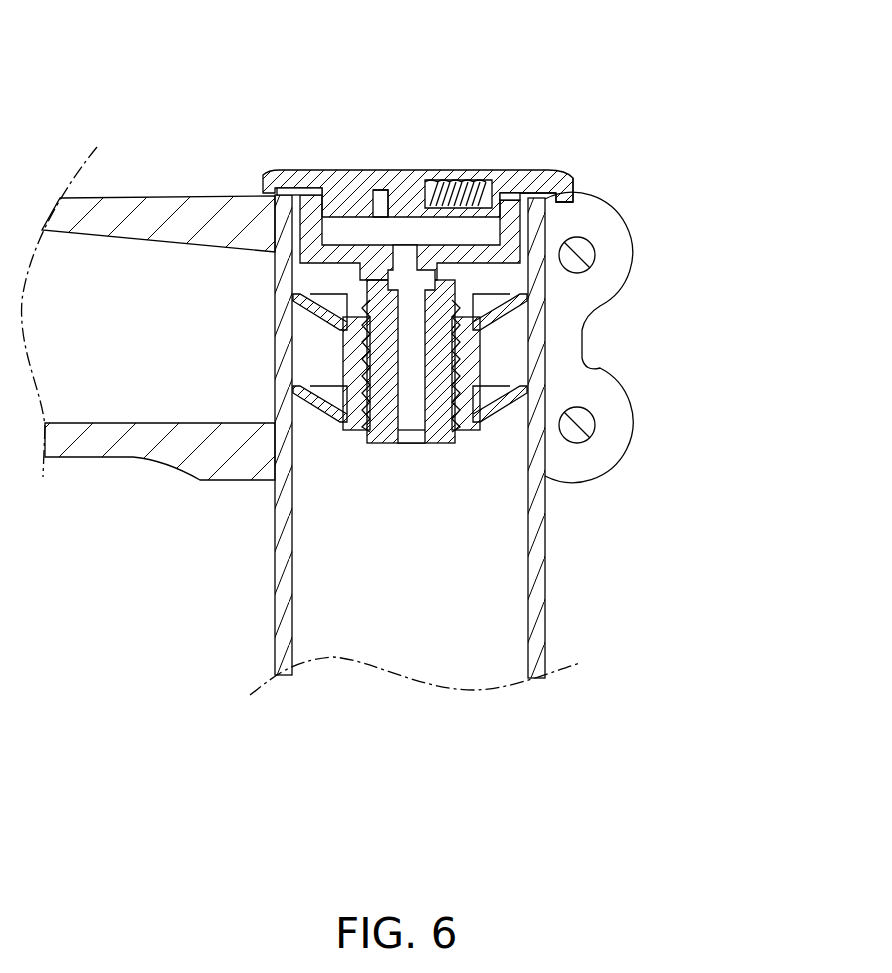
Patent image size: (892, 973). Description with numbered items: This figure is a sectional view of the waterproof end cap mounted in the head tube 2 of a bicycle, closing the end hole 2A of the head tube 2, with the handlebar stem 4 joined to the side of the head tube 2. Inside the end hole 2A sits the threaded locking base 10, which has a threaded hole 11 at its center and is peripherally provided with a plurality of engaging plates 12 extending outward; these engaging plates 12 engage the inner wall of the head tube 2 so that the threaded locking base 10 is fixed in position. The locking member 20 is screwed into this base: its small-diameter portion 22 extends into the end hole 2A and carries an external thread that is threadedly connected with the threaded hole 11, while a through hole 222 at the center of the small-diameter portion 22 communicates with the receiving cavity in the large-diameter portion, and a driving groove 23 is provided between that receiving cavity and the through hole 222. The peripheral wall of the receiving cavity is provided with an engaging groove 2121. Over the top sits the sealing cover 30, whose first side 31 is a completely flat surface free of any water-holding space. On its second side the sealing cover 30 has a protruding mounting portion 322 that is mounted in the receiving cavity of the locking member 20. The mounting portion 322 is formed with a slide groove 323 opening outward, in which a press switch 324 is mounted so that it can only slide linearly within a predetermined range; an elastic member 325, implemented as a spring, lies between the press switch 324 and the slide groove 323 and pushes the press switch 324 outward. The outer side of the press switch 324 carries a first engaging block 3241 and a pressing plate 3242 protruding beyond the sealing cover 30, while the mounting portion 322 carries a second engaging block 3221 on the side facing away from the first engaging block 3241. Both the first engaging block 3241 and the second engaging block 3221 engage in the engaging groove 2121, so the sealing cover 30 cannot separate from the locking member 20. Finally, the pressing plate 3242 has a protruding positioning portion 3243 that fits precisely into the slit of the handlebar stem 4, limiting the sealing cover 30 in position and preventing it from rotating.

The head tube 2 is at (546, 596).
The end hole 2A is at (323, 498).
The handlebar stem 4 is at (152, 203).
The threaded locking base 10 is at (522, 389).
The threaded hole 11 is at (305, 373).
The small-diameter portion 22 is at (343, 362).
The engaging plates 12 is at (520, 387).
The locking member 20 is at (524, 264).
The driving groove 23 is at (420, 272).
The sealing cover 30 is at (467, 132).
The first side 31 is at (318, 170).
The mounting portion 322 is at (481, 155).
The slide groove 323 is at (371, 180).
The press switch 324 is at (530, 175).
The elastic member 325 is at (458, 175).
The pressing plate 3242 is at (573, 178).
The protruding positioning portion 3243 is at (572, 203).
The engaging groove 2121 is at (497, 130).
The second engaging block 3221 is at (283, 183).
The first engaging block 3241 is at (513, 193).
The through hole 222 is at (412, 432).